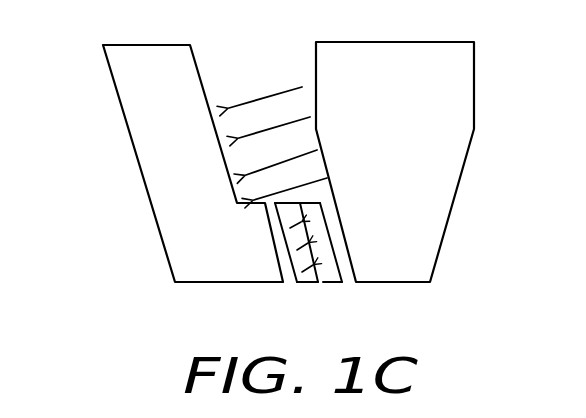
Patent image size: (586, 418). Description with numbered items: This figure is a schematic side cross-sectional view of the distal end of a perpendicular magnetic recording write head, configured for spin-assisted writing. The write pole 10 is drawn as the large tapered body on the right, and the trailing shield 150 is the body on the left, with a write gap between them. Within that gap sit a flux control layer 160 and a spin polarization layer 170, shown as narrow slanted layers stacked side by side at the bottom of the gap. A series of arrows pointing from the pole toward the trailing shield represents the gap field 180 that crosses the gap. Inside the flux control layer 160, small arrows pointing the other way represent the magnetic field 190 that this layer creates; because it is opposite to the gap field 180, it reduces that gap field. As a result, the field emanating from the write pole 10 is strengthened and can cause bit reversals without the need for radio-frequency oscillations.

The write pole 10 is at (460, 97).
The trailing shield 150 is at (133, 97).
The flux control layer 160 is at (312, 278).
The spin polarization layer 170 is at (338, 276).
The gap field 180 is at (260, 83).
The magnetic field 190 is at (296, 262).